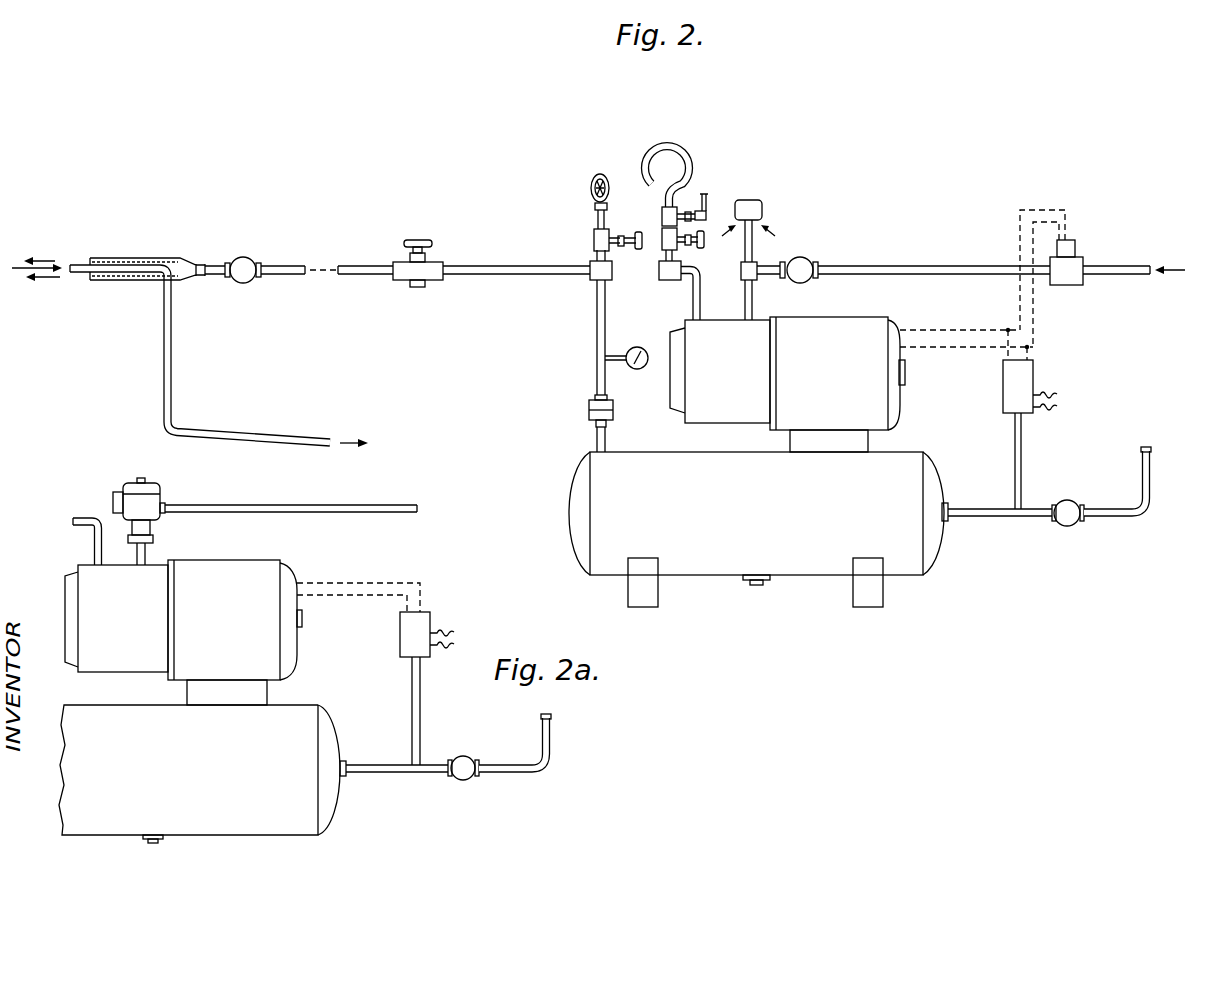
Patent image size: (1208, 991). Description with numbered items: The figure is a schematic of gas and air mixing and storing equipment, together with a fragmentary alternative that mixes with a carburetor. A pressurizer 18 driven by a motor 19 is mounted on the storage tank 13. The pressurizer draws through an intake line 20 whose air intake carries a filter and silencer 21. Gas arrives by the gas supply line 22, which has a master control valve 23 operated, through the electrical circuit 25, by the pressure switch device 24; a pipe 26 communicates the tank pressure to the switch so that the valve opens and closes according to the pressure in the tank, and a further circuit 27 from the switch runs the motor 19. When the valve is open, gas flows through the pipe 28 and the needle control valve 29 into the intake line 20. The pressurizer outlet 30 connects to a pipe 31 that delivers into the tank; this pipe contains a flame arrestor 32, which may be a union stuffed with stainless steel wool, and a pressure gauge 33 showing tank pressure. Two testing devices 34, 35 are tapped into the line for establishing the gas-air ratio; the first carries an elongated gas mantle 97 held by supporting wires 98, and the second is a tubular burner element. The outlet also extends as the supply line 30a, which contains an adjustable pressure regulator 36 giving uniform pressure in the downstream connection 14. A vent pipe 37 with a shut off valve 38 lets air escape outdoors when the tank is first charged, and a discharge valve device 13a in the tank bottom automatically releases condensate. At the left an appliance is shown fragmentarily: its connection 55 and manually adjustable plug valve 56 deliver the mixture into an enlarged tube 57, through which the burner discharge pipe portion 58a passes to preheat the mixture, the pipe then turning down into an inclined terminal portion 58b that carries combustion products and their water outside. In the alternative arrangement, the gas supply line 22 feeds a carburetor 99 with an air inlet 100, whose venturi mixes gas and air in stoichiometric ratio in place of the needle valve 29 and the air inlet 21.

In FIG. 2, the storage tank 13 is at (906, 570).
In FIG. 2A, the storage tank 13 is at (184, 766).
In FIG. 2, the discharge valve device 13a is at (758, 586).
In FIG. 2, the connection 14 is at (362, 266).
In FIG. 2, the pressurizer 18 is at (742, 371).
In FIG. 2A, the pressurizer 18 is at (131, 620).
In FIG. 2, the driving motor 19 is at (846, 371).
In FIG. 2A, the driving motor 19 is at (241, 618).
In FIG. 2, the intake line 20 is at (757, 298).
In FIG. 2A, the intake line 20 is at (152, 550).
In FIG. 2, the filter and silencer 21 is at (760, 202).
In FIG. 2, the gas supply line 22 is at (1120, 278).
In FIG. 2A, the gas supply line 22 is at (318, 506).
In FIG. 2, the master control valve 23 is at (1085, 258).
In FIG. 2, the pressure switch device 24 is at (1035, 378).
In FIG. 2A, the pressure switch device 24 is at (398, 630).
In FIG. 2, the electrical circuit 25 is at (1006, 241).
In FIG. 2, the pipe 26 is at (1016, 450).
In FIG. 2A, the pipe 26 is at (421, 706).
In FIG. 2, the circuit 27 is at (966, 347).
In FIG. 2A, the circuit 27 is at (345, 592).
In FIG. 2, the pipe 28 is at (892, 266).
In FIG. 2, the needle control valve 29 is at (801, 258).
In FIG. 2, the pressurizer outlet 30 is at (692, 294).
In FIG. 2A, the pressurizer outlet 30 is at (89, 516).
In FIG. 2, the supply line 30a is at (498, 266).
In FIG. 2, the pipe 31 is at (597, 337).
In FIG. 2, the flame arrestor 32 is at (588, 418).
In FIG. 2, the pressure gauge 33 is at (637, 370).
In FIG. 2, the testing device 34 is at (578, 205).
In FIG. 2, the testing device 35 is at (698, 191).
In FIG. 2, the adjustable pressure regulator 36 is at (395, 262).
In FIG. 2, the vent pipe 37 is at (1142, 470).
In FIG. 2A, the vent pipe 37 is at (552, 740).
In FIG. 2, the shut off valve 38 is at (1067, 527).
In FIG. 2A, the shut off valve 38 is at (470, 781).
In FIG. 2, the connection 55 is at (276, 276).
In FIG. 2, the manually adjustable plug valve 56 is at (250, 258).
In FIG. 2, the enlarged tube 57 is at (132, 258).
In FIG. 2, the discharge pipe portion 58a is at (96, 273).
In FIG. 2, the downwardly inclined terminal portion 58b is at (232, 436).
In FIG. 2, the gas mantle 97 is at (605, 180).
In FIG. 2, the supporting wires 98 is at (599, 178).
In FIG. 2A, the carburetor 99 is at (150, 491).
In FIG. 2A, the air inlet 100 is at (116, 496).